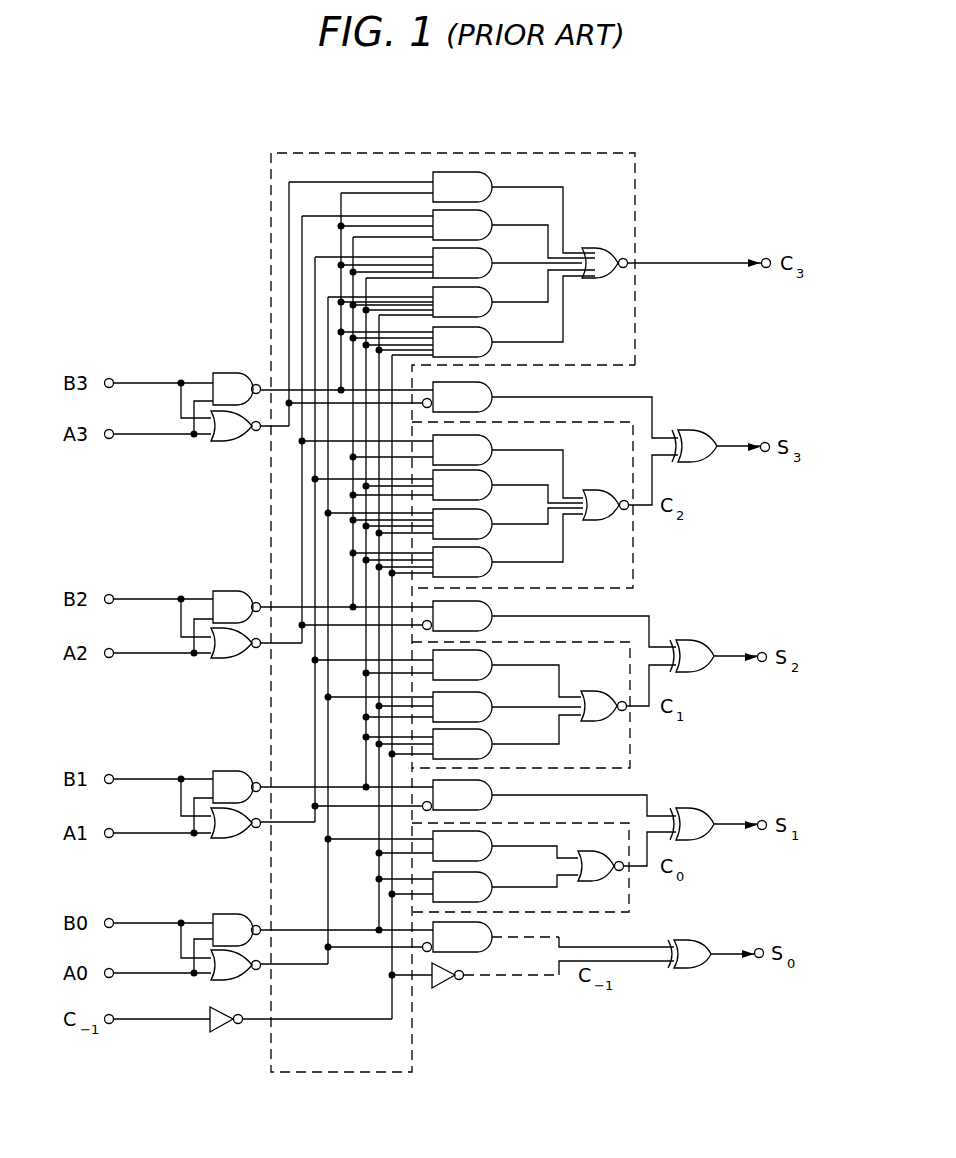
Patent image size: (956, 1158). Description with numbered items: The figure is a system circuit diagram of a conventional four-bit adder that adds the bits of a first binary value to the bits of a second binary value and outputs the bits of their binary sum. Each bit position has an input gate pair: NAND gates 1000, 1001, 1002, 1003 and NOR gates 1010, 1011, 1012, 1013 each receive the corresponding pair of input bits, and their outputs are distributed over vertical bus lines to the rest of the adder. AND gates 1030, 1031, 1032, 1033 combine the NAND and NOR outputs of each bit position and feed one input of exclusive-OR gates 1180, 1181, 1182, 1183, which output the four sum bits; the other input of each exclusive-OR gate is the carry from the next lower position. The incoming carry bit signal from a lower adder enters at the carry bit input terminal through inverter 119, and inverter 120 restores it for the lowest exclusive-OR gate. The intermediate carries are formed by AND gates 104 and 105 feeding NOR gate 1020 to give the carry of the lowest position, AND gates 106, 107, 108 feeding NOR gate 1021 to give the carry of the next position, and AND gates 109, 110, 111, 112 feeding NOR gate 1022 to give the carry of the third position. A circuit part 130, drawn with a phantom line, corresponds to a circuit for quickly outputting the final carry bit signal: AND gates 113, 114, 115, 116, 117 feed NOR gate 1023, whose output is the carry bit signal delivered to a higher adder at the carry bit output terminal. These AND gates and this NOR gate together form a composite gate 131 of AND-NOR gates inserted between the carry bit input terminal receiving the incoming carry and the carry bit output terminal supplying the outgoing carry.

The NAND gate 1003 is at (226, 373).
The NAND gate 1002 is at (226, 591).
The NAND gate 1001 is at (226, 771).
The NAND gate 1000 is at (226, 914).
The NOR gate 1013 is at (226, 441).
The NOR gate 1012 is at (226, 658).
The NOR gate 1011 is at (226, 838).
The NOR gate 1010 is at (212, 975).
The NOR gate 1023 is at (590, 279).
The NOR gate 1022 is at (593, 520).
The NOR gate 1021 is at (591, 721).
The NOR gate 1020 is at (589, 881).
The AND gate 1033 is at (555, 410).
The AND gate 1032 is at (554, 624).
The AND gate 1031 is at (554, 798).
The AND gate 1030 is at (553, 937).
The AND gate 104 is at (478, 887).
The AND gate 105 is at (453, 846).
The AND gate 106 is at (473, 737).
The AND gate 107 is at (454, 707).
The AND gate 108 is at (448, 673).
The AND gate 109 is at (468, 545).
The AND gate 110 is at (455, 523).
The AND gate 111 is at (449, 486).
The AND gate 112 is at (442, 466).
The AND gate 113 is at (461, 316).
The AND gate 114 is at (455, 293).
The AND gate 115 is at (448, 263).
The AND gate 116 is at (442, 234).
The AND gate 117 is at (435, 212).
The exclusive-OR gate 1183 is at (692, 430).
The exclusive-OR gate 1182 is at (691, 640).
The exclusive-OR gate 1181 is at (689, 808).
The exclusive-OR gate 1180 is at (689, 940).
The inverter 119 is at (218, 1032).
The inverter 120 is at (446, 988).
The circuit part 130 is at (567, 150).
The composite gate 131 is at (577, 243).